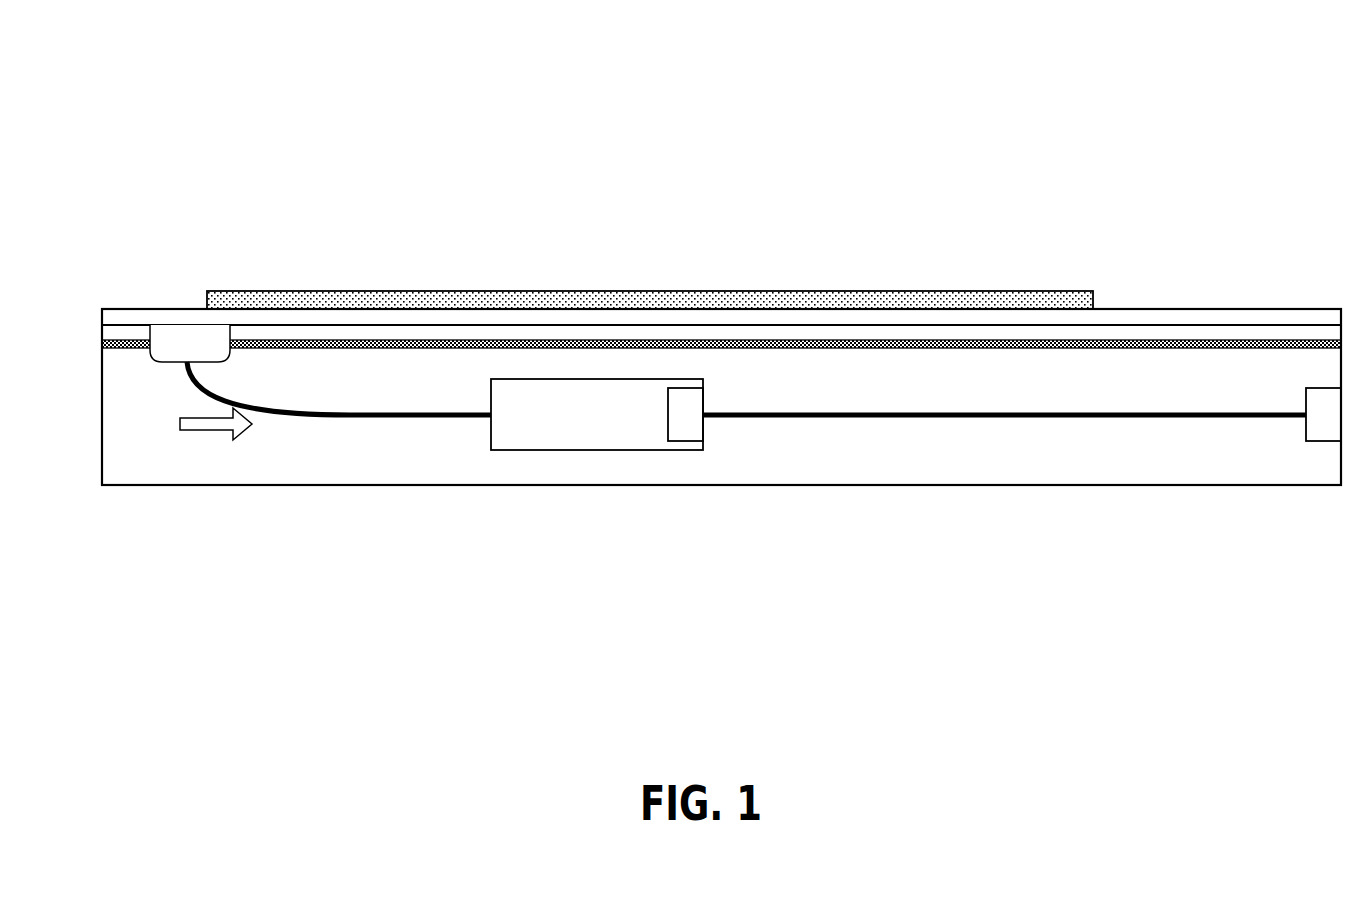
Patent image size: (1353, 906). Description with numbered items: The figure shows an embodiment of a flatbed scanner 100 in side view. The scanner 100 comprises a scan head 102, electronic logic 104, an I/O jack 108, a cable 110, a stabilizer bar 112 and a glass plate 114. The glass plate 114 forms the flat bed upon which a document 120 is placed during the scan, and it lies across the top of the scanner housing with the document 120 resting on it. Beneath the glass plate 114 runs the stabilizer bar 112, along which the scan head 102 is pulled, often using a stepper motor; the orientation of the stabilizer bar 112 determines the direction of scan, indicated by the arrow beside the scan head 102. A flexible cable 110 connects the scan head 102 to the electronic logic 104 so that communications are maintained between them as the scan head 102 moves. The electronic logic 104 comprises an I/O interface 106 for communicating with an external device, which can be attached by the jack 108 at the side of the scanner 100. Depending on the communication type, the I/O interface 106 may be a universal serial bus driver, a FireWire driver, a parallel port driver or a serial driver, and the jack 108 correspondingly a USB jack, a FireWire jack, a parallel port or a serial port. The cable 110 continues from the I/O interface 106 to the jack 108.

The scanner 100 is at (1292, 54).
The scan head 102 is at (189, 343).
The electronic logic 104 is at (597, 415).
The I/O interface 106 is at (686, 415).
The I/O jack 108 is at (1323, 415).
The cable 110 is at (350, 415).
The stabilizer bar 112 is at (1057, 345).
The glass plate 114 is at (933, 317).
The document 120 is at (650, 300).